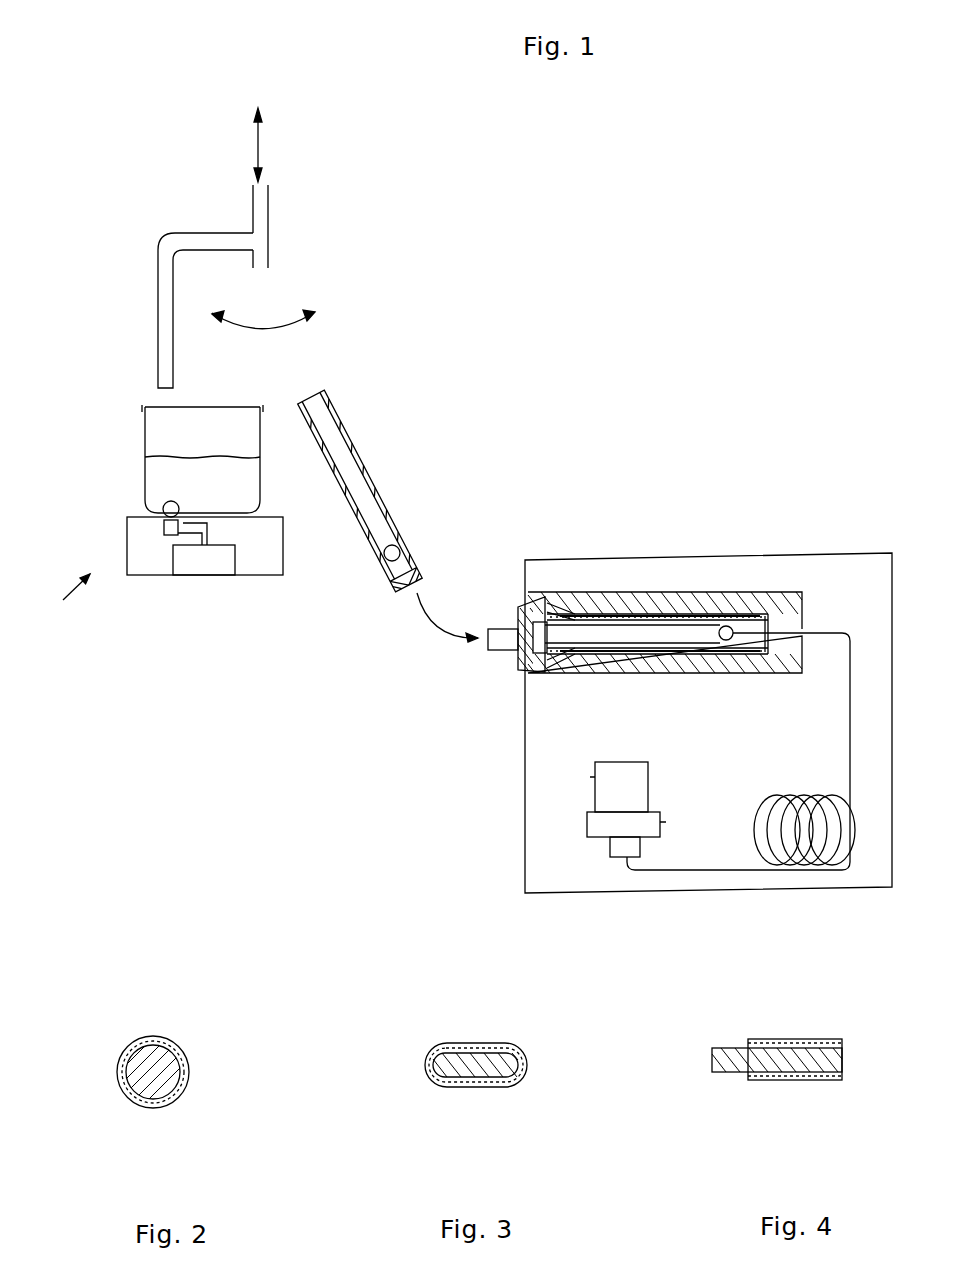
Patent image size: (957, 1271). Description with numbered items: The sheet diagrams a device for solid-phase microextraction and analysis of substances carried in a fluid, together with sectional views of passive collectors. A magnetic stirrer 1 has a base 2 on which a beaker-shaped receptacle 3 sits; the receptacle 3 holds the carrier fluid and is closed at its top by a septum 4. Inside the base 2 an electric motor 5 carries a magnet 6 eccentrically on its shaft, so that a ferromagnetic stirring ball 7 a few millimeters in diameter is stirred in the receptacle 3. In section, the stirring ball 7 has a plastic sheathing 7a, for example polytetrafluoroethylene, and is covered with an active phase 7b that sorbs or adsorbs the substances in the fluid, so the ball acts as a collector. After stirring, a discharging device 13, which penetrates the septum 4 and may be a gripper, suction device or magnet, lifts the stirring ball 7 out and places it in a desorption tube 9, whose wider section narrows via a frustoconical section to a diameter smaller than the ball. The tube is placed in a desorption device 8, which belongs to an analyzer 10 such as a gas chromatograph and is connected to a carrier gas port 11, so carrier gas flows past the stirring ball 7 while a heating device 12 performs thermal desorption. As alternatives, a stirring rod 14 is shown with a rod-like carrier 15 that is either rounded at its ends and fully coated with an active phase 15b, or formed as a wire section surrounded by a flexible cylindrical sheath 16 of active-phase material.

In FIG. 1, the magnetic stirrer 1 is at (62, 601).
In FIG. 1, the base 2 is at (255, 540).
In FIG. 1, the receptacle 3 is at (145, 445).
In FIG. 1, the septum 4 is at (140, 408).
In FIG. 1, the electric motor 5 is at (188, 560).
In FIG. 1, the magnet 6 is at (172, 533).
In FIG. 1, the stirring ball 7 is at (165, 510).
In FIG. 2, the stirring ball 7 is at (163, 1040).
In FIG. 2, the plastic sheathing 7a is at (157, 1098).
In FIG. 2, the active phase 7b is at (187, 1085).
In FIG. 1, the desorption device 8 is at (558, 595).
In FIG. 1, the desorption tube 9 is at (378, 490).
In FIG. 1, the analyzer 10 is at (525, 735).
In FIG. 1, the carrier gas port 11 is at (535, 605).
In FIG. 1, the heating device 12 is at (612, 617).
In FIG. 1, the discharging device 13 is at (218, 243).
In FIG. 3, the stirring rod 14 is at (470, 1038).
In FIG. 4, the stirring rod 14 is at (735, 1035).
In FIG. 3, the rod-like carrier 15 is at (468, 1078).
In FIG. 4, the rod-like carrier 15 is at (749, 1072).
In FIG. 3, the active phase 15b is at (497, 1087).
In FIG. 4, the cylindrical sheath 16 is at (833, 1082).